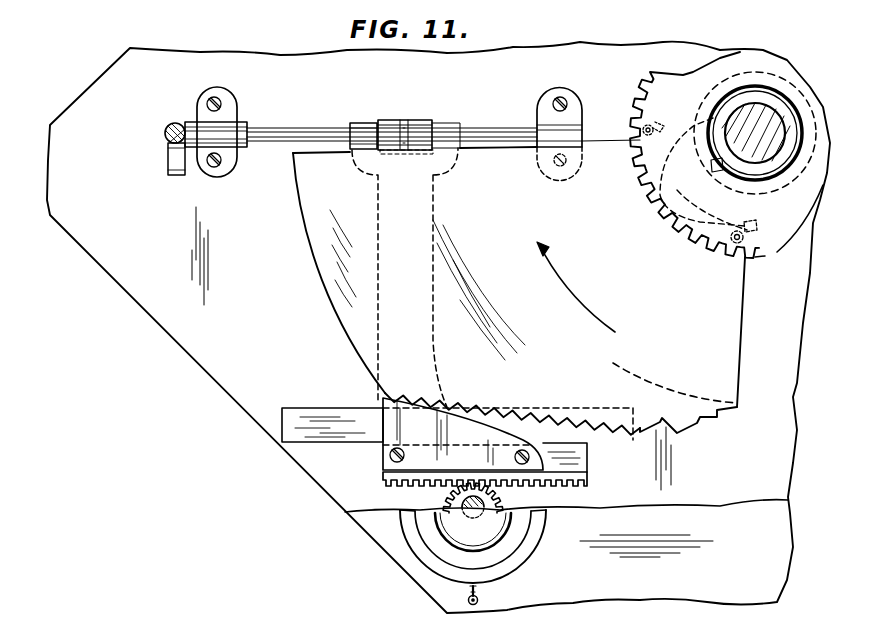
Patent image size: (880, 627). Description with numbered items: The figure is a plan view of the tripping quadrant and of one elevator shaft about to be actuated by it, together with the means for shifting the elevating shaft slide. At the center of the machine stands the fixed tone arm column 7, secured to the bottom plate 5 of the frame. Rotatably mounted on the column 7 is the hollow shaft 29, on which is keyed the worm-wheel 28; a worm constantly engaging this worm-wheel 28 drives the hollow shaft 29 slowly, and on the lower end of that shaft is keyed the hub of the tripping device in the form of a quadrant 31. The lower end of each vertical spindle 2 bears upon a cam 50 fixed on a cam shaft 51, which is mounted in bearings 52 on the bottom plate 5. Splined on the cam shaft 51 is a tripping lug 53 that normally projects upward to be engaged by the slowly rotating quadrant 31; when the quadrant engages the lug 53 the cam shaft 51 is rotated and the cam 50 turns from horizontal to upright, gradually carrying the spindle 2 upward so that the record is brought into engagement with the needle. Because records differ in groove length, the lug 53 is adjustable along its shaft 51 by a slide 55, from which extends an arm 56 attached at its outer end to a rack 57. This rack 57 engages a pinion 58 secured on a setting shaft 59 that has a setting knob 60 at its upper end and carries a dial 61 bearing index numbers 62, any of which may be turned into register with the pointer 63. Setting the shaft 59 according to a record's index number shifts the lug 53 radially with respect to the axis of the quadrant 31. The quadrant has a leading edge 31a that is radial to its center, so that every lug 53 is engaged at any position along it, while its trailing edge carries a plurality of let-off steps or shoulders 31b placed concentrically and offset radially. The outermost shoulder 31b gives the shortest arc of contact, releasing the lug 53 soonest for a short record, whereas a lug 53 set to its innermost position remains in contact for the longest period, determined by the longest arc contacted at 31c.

The vertical spindle 2 is at (165, 134).
The bottom plate 5 is at (230, 391).
The tone arm column 7 is at (783, 118).
The worm-wheel 28 is at (683, 75).
The hollow shaft 29 is at (780, 96).
The tripping quadrant 31 is at (733, 323).
The leading edge 31a is at (493, 142).
The let-off steps 31b is at (700, 421).
The longest arc of contact 31c is at (656, 380).
The cam 50 is at (170, 162).
The cam shaft 51 is at (290, 136).
The bearings 52 is at (213, 128).
The tripping lug 53 is at (404, 122).
The slide 55 is at (361, 124).
The arm 56 is at (388, 402).
The rack 57 is at (575, 468).
The pinion 58 is at (443, 499).
The setting shaft 59 is at (482, 508).
The setting knob 60 is at (447, 523).
The dial 61 is at (417, 552).
The index numbers 62 is at (544, 541).
The pointer 63 is at (478, 597).